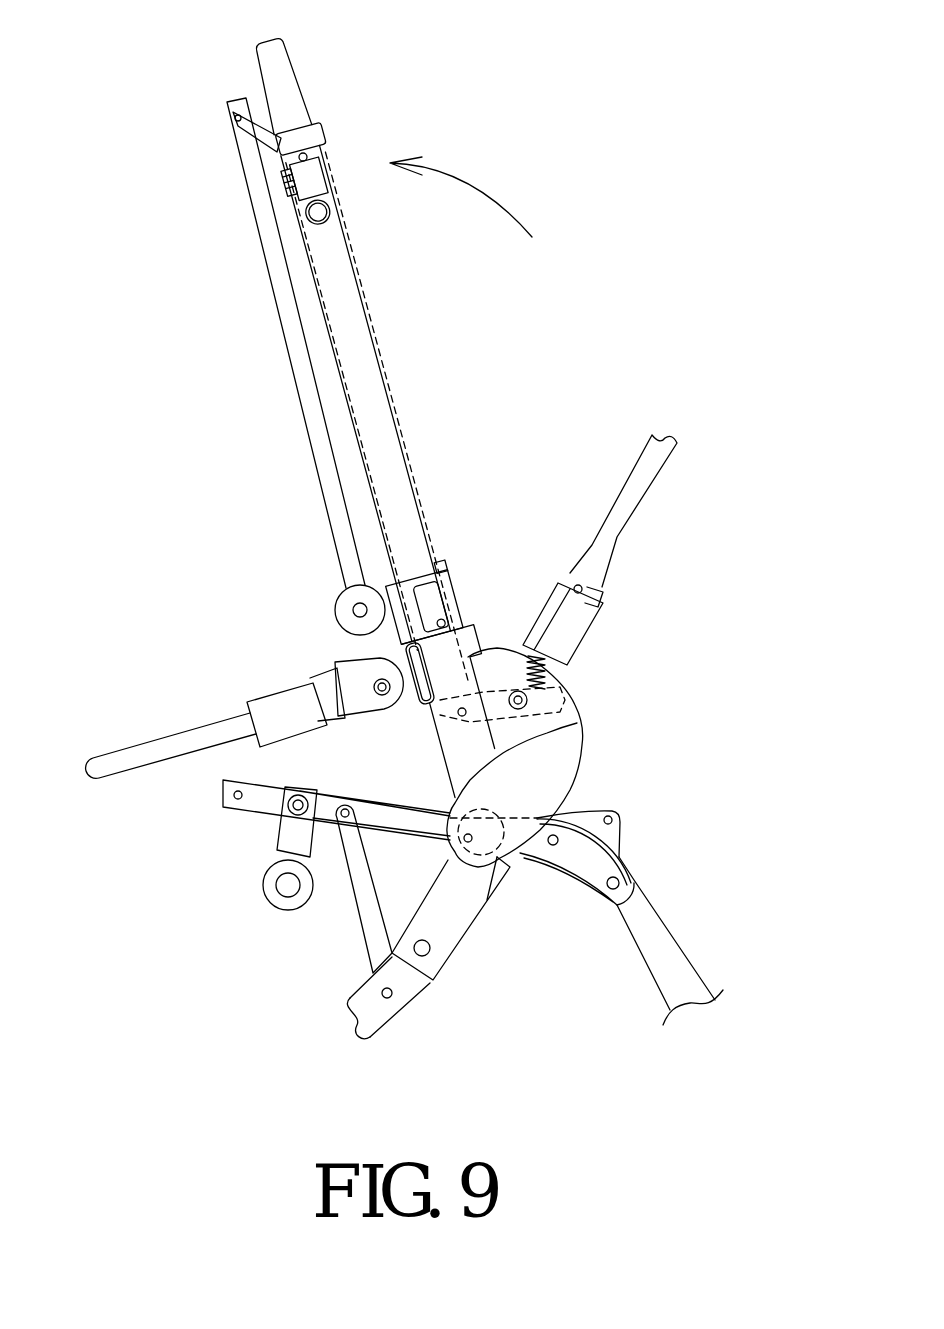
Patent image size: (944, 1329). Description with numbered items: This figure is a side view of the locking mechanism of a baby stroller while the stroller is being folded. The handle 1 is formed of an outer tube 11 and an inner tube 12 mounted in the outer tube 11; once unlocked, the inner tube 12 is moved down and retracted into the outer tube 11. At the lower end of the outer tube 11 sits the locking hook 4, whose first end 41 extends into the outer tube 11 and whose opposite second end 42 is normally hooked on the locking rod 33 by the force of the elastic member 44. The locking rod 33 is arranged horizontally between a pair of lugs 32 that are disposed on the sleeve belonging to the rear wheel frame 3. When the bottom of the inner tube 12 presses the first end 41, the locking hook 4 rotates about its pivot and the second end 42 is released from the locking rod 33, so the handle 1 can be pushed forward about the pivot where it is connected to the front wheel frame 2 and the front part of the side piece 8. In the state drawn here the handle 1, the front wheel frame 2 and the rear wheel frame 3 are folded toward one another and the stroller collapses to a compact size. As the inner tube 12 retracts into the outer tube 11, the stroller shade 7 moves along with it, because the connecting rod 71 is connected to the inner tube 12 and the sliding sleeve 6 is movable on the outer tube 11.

The handle 1 is at (367, 293).
The outer tube 11 is at (420, 487).
The inner tube 12 is at (373, 387).
The sliding sleeve 6 is at (447, 572).
The stroller shade 7 is at (255, 186).
The connecting rod 71 is at (262, 132).
The locking hook 4 is at (497, 690).
The first end 41 is at (430, 707).
The second end 42 is at (530, 701).
The elastic member 44 is at (547, 675).
The lugs 32 is at (588, 820).
The locking rod 33 is at (613, 822).
The rear wheel frame 3 is at (702, 957).
The side piece 8 is at (525, 850).
The front wheel frame 2 is at (400, 1015).